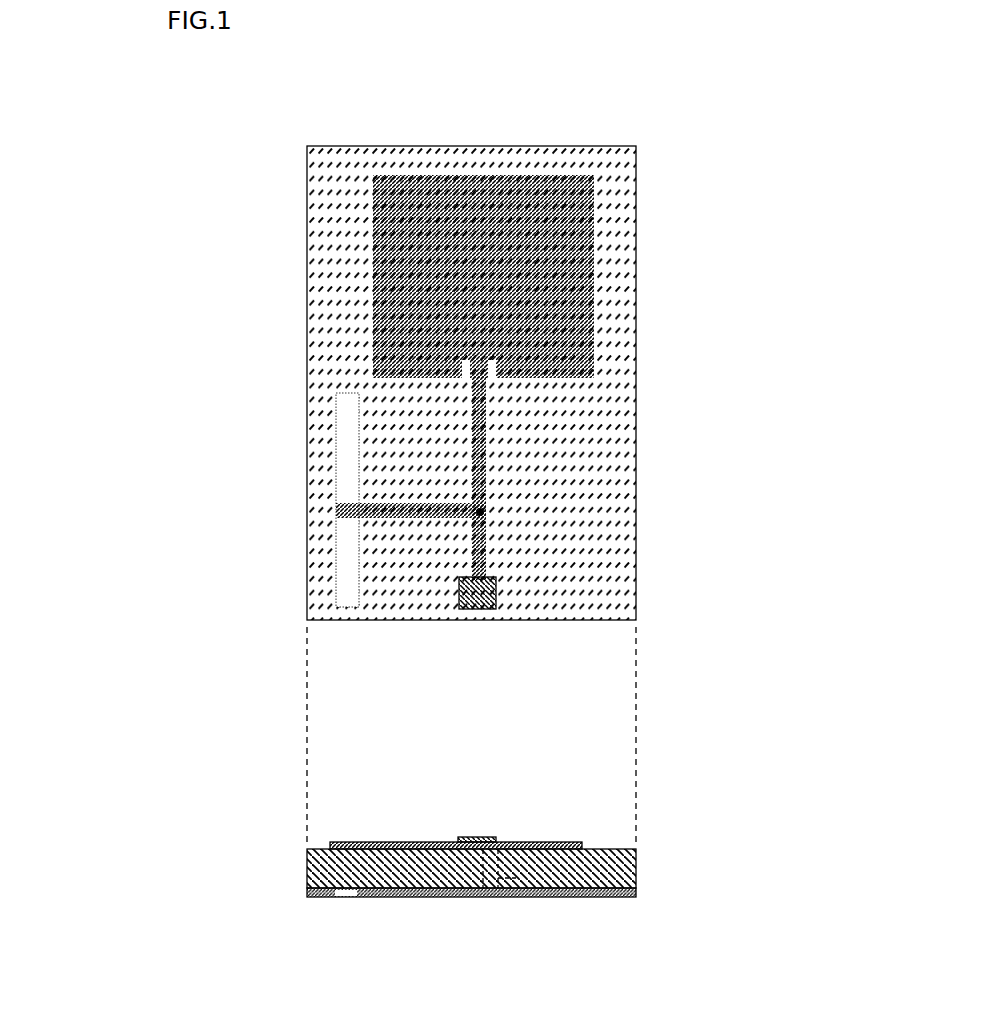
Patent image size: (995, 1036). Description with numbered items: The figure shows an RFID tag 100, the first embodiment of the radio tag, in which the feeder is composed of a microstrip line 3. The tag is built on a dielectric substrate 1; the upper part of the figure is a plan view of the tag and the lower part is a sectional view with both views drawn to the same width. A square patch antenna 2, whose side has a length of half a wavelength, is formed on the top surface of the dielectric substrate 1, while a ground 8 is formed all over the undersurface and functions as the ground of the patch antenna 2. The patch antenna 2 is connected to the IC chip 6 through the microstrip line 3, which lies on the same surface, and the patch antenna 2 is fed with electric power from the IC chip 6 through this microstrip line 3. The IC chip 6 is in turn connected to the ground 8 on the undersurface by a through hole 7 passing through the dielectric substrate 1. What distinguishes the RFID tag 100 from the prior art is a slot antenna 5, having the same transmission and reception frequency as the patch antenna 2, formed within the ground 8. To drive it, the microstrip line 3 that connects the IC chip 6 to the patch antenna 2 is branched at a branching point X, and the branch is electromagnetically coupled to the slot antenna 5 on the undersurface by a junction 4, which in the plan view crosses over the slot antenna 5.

The RFID tag 100 is at (430, 116).
The dielectric substrate 1 is at (334, 210).
The patch antenna 2 is at (384, 280).
The microstrip line 3 is at (487, 473).
The junction 4 is at (338, 508).
The slot antenna 5 is at (345, 596).
The IC chip 6 is at (497, 578).
The through hole 7 is at (497, 607).
The ground 8 is at (590, 421).
The branching point X is at (484, 511).